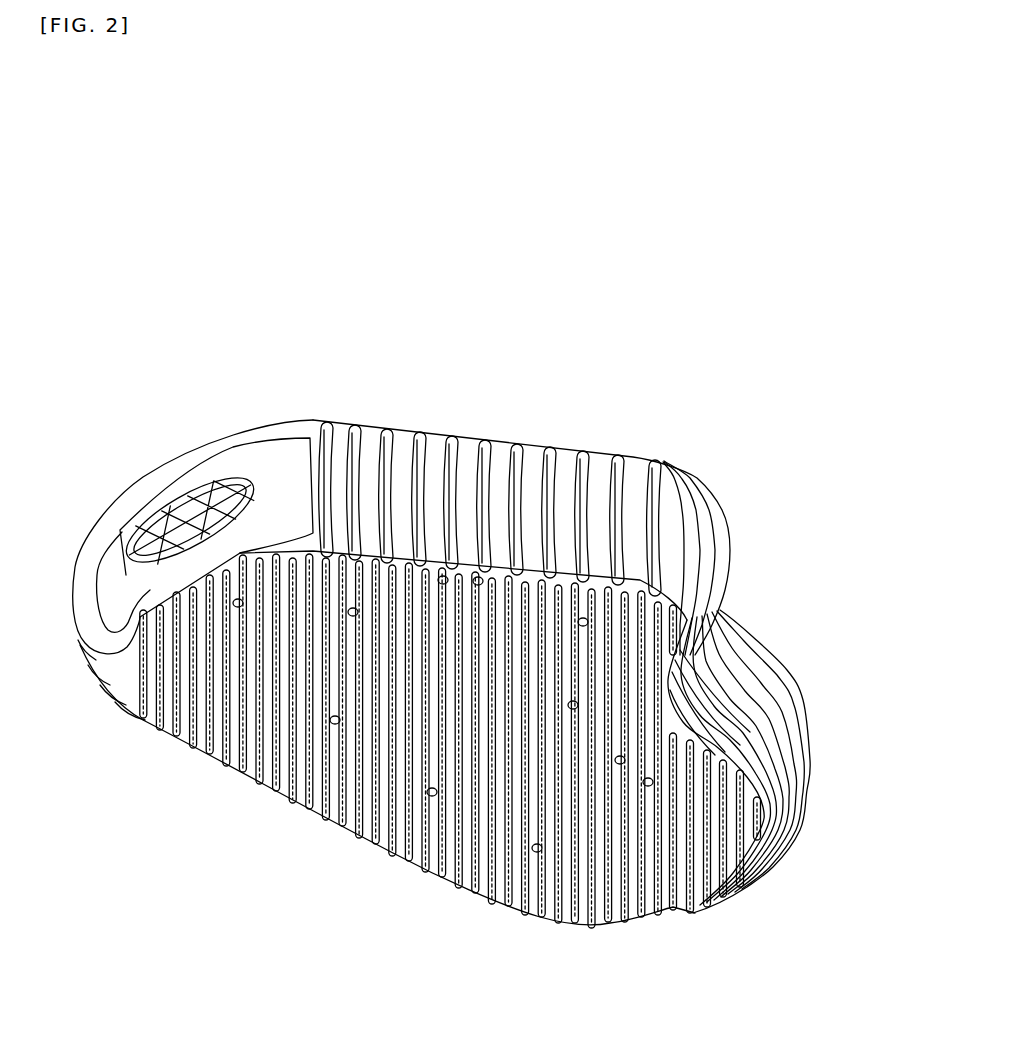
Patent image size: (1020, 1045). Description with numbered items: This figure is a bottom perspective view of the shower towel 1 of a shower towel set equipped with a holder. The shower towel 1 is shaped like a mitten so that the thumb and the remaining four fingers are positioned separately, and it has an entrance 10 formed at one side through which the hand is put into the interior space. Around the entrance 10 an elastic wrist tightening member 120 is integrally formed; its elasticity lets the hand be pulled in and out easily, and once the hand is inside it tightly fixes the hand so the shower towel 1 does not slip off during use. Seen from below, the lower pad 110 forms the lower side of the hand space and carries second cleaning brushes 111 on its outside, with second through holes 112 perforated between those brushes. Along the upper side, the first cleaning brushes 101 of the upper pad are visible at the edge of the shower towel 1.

The shower towel 1 is at (600, 356).
The entrance 10 is at (180, 500).
The first cleaning brushes 101 is at (376, 425).
The lower pad 110 is at (748, 848).
The second cleaning brushes 111 is at (277, 795).
The second through holes 112 is at (648, 782).
The wrist tightening member 120 is at (285, 458).